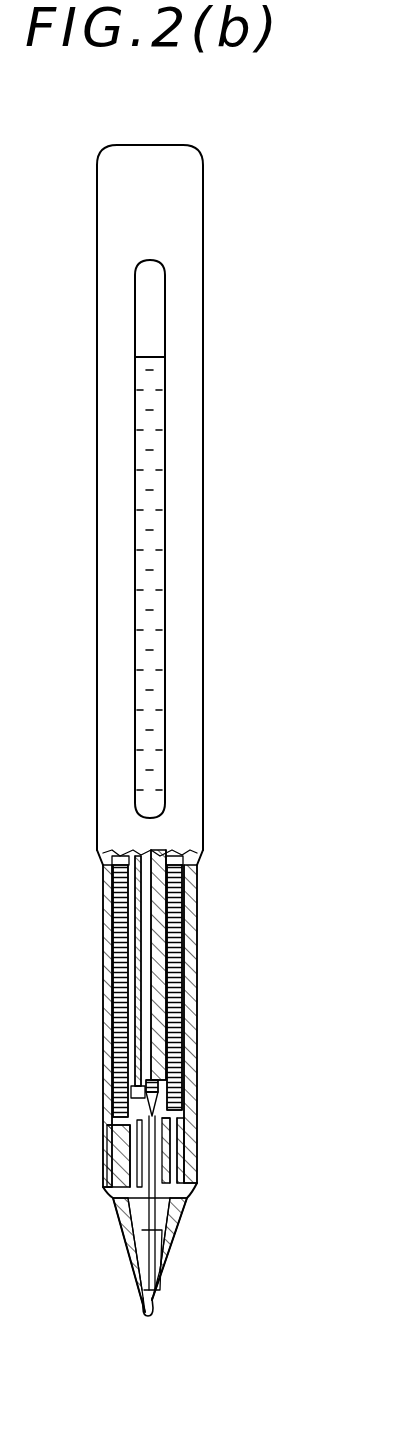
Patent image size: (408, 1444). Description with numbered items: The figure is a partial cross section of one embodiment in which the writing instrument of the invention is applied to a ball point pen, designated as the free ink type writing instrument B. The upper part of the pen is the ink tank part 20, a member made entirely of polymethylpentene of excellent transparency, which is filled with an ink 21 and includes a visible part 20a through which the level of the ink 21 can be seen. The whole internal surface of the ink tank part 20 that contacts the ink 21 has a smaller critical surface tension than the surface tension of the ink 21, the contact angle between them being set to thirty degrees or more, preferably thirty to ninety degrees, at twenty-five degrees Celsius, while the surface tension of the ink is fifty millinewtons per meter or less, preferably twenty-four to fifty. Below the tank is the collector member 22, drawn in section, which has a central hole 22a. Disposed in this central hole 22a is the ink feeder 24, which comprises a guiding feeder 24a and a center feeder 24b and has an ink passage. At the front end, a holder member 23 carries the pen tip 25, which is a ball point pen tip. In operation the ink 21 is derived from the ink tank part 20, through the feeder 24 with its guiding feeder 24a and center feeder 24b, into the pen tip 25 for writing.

The free ink type writing instrument B is at (207, 388).
The ink tank part 20 is at (187, 547).
The visible part 20a is at (157, 463).
The ink 21 is at (157, 628).
The collector member 22 is at (112, 972).
The central hole 22a is at (167, 905).
The holder member 23 is at (130, 1243).
The ink feeder 24 is at (150, 970).
The guiding feeder 24a is at (138, 1033).
The center feeder 24b is at (153, 1123).
The pen tip 25 is at (140, 1293).